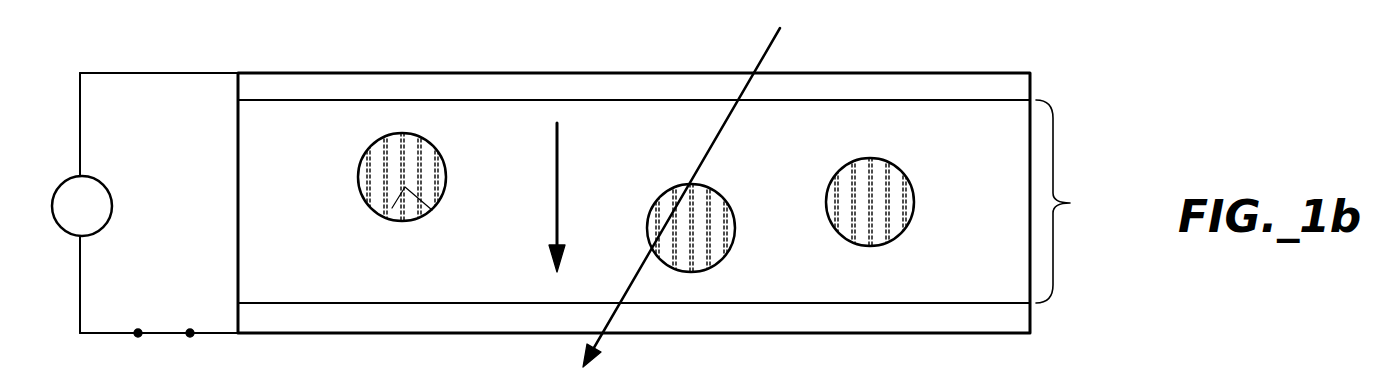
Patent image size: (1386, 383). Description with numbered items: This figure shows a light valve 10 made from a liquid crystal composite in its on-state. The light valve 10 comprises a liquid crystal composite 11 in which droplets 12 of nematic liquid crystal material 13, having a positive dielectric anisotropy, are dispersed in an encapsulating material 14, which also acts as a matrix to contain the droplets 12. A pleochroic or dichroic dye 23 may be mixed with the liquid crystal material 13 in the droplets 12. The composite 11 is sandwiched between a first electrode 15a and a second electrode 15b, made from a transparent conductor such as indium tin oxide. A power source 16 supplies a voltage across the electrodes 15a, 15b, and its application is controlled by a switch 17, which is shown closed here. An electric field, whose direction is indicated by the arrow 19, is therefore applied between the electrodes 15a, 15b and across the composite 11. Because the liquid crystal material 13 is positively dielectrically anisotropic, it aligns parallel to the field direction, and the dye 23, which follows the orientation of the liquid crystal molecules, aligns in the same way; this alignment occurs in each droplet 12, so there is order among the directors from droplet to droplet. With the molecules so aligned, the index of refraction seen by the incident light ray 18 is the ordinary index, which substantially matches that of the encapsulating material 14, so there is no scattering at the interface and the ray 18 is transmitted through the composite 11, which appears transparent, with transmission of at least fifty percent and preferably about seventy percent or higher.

The light valve 10 is at (1076, 88).
The liquid crystal composite 11 is at (1072, 203).
The droplets 12 is at (437, 150).
The nematic liquid crystal material 13 is at (388, 220).
The encapsulating material 14 is at (635, 132).
The first electrode 15a is at (917, 70).
The second electrode 15b is at (1013, 321).
The power source 16 is at (103, 185).
The switch 17 is at (167, 330).
The incident light ray 18 is at (767, 50).
The arrow 19 is at (562, 158).
The pleochroic or dichroic dye 23 is at (432, 212).